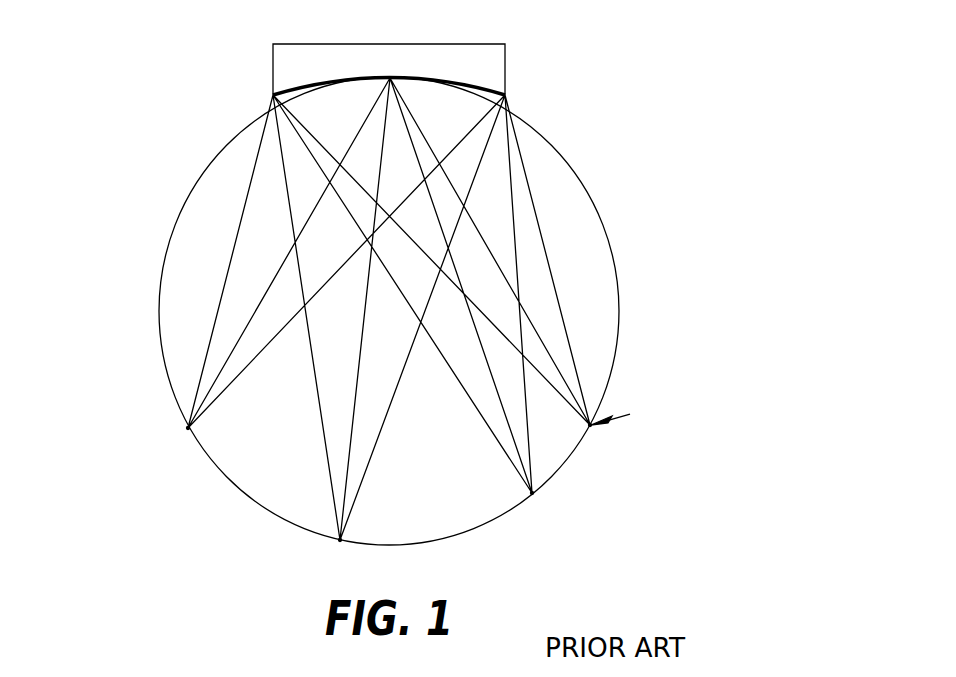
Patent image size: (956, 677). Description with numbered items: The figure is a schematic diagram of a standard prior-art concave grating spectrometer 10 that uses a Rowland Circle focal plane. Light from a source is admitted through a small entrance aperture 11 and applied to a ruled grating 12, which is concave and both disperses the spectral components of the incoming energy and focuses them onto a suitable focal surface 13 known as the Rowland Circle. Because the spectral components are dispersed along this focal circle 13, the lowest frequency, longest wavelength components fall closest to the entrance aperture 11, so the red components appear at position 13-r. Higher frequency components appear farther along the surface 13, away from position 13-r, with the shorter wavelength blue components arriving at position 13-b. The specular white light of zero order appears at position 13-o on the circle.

The concave grating spectrometer 10 is at (170, 170).
The entrance aperture 11 is at (194, 429).
The ruled grating 12 is at (305, 58).
The focal surface 13 is at (167, 257).
The red position 13-r is at (342, 538).
The blue position 13-b is at (530, 494).
The zero order position 13-o is at (592, 428).